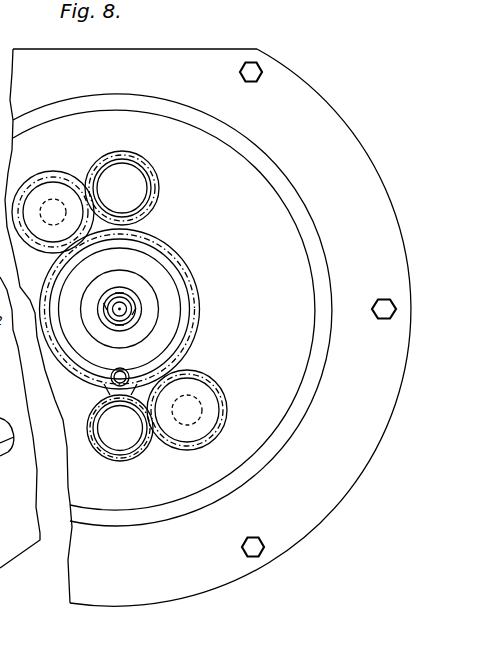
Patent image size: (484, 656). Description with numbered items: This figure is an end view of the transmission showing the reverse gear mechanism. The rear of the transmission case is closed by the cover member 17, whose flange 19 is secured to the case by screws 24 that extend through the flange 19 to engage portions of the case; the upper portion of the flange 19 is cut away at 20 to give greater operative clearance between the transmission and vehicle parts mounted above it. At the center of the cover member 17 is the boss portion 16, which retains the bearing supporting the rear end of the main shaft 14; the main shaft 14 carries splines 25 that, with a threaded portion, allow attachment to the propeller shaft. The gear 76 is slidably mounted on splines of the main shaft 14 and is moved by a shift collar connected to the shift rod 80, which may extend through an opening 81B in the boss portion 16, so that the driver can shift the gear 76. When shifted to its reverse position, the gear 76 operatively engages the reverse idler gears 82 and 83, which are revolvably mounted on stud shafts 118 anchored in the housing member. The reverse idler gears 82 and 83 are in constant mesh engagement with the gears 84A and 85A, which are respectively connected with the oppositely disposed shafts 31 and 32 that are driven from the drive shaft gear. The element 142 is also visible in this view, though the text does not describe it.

The cut away portion 20 is at (204, 49).
The cover member 17 is at (245, 132).
The flange 19 is at (338, 113).
The screws 24 is at (264, 552).
The boss portion 16 is at (150, 319).
The main shaft 14 is at (134, 301).
The splines 25 is at (110, 322).
The gear 76 is at (200, 298).
The reverse idler gear 82 is at (67, 175).
The stud shafts 118 is at (51, 198).
The shaft 31 is at (147, 179).
The gear 84A is at (152, 174).
The shift rod 80 is at (129, 371).
The opening 81B is at (133, 383).
The reverse idler gear 83 is at (228, 385).
The shaft 32 is at (118, 446).
The gear 85A is at (105, 457).
The link 142 is at (0, 476).